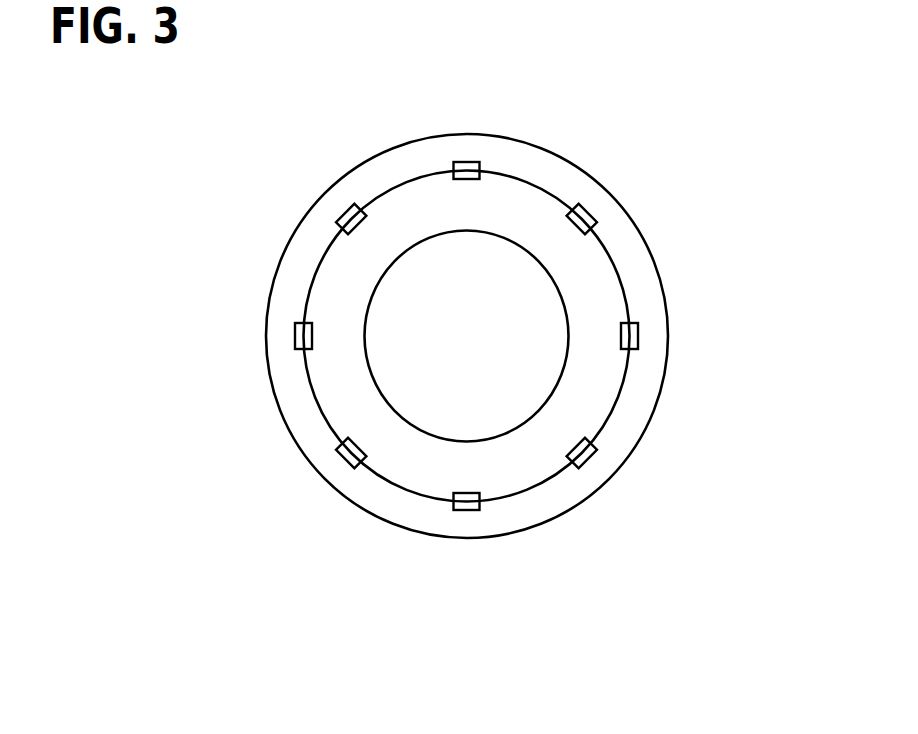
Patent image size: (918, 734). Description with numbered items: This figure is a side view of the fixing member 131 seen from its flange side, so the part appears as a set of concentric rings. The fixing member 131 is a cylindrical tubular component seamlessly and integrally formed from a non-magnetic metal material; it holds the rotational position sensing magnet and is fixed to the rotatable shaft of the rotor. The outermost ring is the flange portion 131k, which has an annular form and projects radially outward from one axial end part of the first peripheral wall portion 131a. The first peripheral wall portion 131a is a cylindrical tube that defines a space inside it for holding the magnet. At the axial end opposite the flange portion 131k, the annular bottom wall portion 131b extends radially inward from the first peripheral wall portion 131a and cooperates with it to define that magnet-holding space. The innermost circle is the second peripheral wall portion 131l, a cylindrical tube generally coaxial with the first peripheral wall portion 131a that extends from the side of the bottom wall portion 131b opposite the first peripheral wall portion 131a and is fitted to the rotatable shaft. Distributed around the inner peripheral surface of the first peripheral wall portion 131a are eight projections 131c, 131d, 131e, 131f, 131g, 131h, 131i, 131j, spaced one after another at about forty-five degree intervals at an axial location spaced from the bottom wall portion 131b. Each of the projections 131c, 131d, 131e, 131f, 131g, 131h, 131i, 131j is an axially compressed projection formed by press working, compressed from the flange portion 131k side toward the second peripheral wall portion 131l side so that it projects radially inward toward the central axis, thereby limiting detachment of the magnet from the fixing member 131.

The fixing member 131 is at (737, 113).
The first peripheral wall portion 131a is at (513, 178).
The bottom wall portion 131b is at (407, 470).
The projection 131c is at (467, 170).
The projection 131d is at (582, 219).
The projection 131e is at (628, 337).
The projection 131f is at (583, 455).
The projection 131g is at (466, 502).
The projection 131h is at (347, 455).
The projection 131i is at (300, 334).
The projection 131j is at (349, 217).
The flange portion 131k is at (543, 506).
The second peripheral wall portion 131l is at (569, 340).